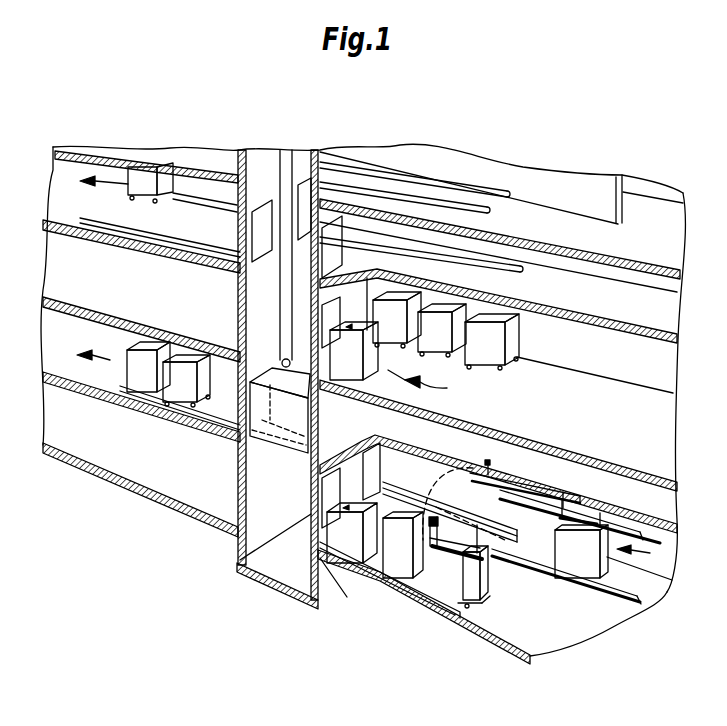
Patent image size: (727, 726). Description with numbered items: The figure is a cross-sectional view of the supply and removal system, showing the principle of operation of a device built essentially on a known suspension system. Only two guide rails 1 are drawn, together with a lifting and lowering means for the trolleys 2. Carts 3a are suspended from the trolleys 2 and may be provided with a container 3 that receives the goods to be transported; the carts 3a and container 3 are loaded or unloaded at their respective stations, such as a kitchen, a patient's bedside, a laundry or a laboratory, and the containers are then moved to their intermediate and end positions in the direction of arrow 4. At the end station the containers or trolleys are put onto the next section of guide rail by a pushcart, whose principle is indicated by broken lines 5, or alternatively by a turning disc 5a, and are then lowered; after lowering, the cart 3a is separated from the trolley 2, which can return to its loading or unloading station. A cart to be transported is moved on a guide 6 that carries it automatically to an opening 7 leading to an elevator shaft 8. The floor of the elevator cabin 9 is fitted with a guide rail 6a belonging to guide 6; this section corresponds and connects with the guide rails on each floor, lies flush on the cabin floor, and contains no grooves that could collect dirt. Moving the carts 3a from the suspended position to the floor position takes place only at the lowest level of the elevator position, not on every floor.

The guide rails 1 is at (648, 535).
The trolleys 2 is at (432, 546).
The container 3 is at (186, 362).
The carts 3a is at (470, 604).
The arrow 4 is at (100, 178).
The pushcart 5 is at (487, 475).
The turning disc 5a is at (484, 560).
The guide 6 is at (212, 200).
The guide rail 6a is at (280, 420).
The opening 7 is at (330, 583).
The elevator shaft 8 is at (260, 545).
The elevator cabin 9 is at (257, 420).